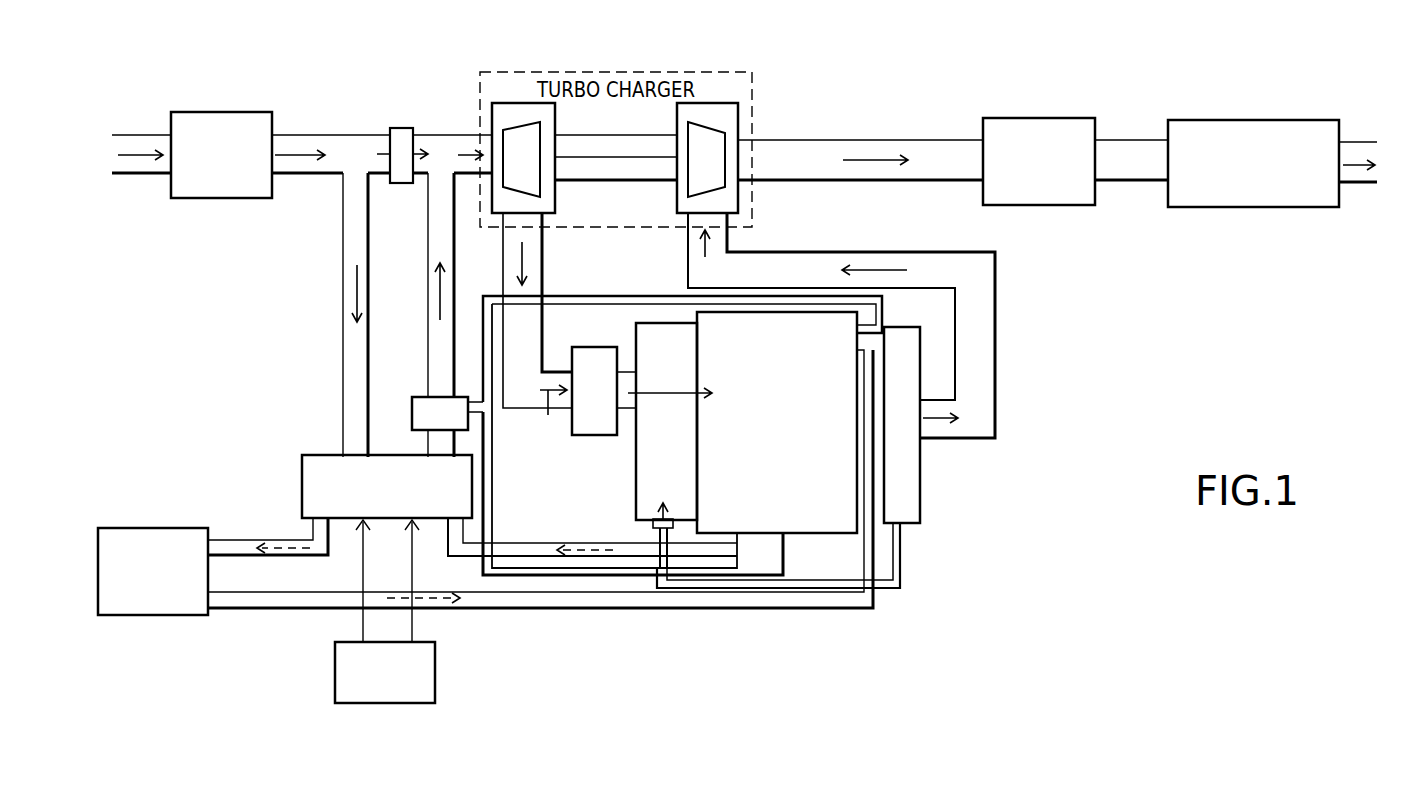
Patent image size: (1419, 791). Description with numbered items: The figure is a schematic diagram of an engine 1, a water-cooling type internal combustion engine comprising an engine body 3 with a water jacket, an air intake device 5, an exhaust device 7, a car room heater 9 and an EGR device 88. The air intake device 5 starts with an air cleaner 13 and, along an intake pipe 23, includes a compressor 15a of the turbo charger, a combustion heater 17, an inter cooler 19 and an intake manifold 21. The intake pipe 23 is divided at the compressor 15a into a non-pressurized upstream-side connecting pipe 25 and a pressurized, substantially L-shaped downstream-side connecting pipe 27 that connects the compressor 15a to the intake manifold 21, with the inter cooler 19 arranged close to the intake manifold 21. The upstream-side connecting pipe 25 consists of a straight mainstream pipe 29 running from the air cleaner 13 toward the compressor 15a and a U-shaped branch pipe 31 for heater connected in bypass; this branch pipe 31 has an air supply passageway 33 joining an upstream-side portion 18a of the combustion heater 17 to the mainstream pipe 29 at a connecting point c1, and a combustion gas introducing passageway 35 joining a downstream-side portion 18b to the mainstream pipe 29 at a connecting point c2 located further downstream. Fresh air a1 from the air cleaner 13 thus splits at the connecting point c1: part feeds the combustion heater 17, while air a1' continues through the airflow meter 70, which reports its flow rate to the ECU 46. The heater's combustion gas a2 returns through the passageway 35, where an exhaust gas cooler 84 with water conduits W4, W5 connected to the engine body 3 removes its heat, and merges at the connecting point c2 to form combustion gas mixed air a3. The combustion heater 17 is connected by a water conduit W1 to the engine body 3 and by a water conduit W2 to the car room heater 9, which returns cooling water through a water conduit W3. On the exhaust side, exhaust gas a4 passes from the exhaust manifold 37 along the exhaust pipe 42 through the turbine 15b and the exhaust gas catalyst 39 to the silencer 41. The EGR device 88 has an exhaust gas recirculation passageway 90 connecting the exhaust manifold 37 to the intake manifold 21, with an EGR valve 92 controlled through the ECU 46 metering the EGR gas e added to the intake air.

The engine 1 is at (815, 58).
The engine body 3 is at (812, 533).
The air intake device 5 is at (267, 262).
The exhaust device 7 is at (952, 118).
The car room heater 9 is at (150, 615).
The air cleaner 13 is at (225, 112).
The compressor 15a is at (707, 103).
The turbine 15b is at (707, 158).
The combustion heater 17 is at (302, 466).
The upstream-side portion 18a is at (350, 453).
The downstream-side portion 18b is at (437, 453).
The inter cooler 19 is at (592, 347).
The intake manifold 21 is at (636, 453).
The intake pipe 23 is at (447, 133).
The upstream-side connecting pipe 25 is at (407, 73).
The downstream-side connecting pipe 27 is at (543, 245).
The mainstream pipe 29 is at (377, 138).
The branch pipe for heater 31 is at (347, 193).
The air supply passageway 33 is at (347, 220).
The combustion gas introducing passageway 35 is at (428, 232).
The exhaust manifold 37 is at (920, 503).
The exhaust gas catalyst 39 is at (1043, 118).
The silencer 41 is at (1255, 120).
The exhaust pipe 42 is at (997, 315).
The ECU 46 is at (383, 705).
The airflow meter 70 is at (402, 128).
The exhaust gas cooler 84 is at (411, 410).
The EGR device 88 is at (902, 555).
The exhaust gas recirculation passageway 90 is at (890, 597).
The EGR valve 92 is at (670, 518).
The water conduit W1 is at (752, 563).
The water conduit W2 is at (223, 538).
The water conduit W3 is at (237, 607).
The water conduit W4 is at (680, 290).
The water conduit W5 is at (493, 480).
The fresh air a1 is at (258, 236).
The air flowing through the mainstream pipe a1' is at (409, 124).
The combustion gas a2 is at (455, 279).
The combustion gas mixed air a3 is at (470, 150).
The exhaust gas a4 is at (872, 163).
The connecting point c1 is at (392, 206).
The connecting point c2 is at (473, 243).
The EGR gas e is at (660, 545).